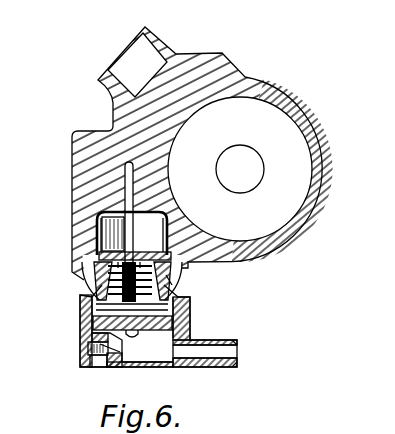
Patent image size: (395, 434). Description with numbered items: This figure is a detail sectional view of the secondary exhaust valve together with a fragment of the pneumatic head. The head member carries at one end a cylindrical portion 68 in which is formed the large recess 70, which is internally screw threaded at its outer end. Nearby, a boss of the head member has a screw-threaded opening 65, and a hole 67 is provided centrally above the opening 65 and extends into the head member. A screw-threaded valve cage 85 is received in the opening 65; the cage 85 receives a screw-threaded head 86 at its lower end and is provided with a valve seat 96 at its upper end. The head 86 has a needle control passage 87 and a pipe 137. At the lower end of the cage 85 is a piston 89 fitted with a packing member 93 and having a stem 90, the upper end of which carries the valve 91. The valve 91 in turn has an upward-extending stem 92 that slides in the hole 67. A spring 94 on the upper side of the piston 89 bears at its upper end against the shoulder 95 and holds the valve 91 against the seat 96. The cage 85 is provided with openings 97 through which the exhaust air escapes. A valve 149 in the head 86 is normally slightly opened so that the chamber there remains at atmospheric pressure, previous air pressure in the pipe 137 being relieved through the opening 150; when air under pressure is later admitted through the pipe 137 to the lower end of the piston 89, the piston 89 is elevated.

The opening 65 is at (97, 241).
The hole 67 is at (126, 174).
The cylindrical portion 68 is at (281, 90).
The recess 70 is at (240, 169).
The valve cage 85 is at (172, 302).
The head 86 is at (153, 368).
The needle control passage 87 is at (112, 372).
The piston 89 is at (88, 313).
The stem 90 is at (90, 294).
The valve 91 is at (110, 259).
The stem 92 is at (128, 228).
The packing member 93 is at (182, 324).
The spring 94 is at (178, 262).
The shoulder 95 is at (100, 270).
The valve seat 96 is at (160, 232).
The openings 97 is at (173, 281).
The pipe 137 is at (217, 358).
The valve 149 is at (88, 348).
The opening 150 is at (90, 372).